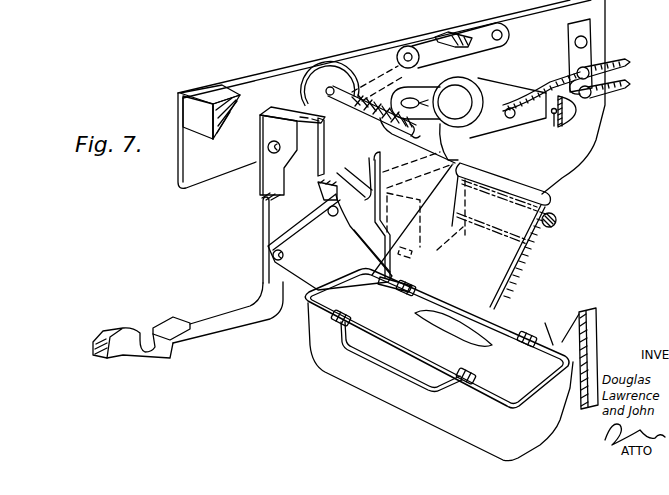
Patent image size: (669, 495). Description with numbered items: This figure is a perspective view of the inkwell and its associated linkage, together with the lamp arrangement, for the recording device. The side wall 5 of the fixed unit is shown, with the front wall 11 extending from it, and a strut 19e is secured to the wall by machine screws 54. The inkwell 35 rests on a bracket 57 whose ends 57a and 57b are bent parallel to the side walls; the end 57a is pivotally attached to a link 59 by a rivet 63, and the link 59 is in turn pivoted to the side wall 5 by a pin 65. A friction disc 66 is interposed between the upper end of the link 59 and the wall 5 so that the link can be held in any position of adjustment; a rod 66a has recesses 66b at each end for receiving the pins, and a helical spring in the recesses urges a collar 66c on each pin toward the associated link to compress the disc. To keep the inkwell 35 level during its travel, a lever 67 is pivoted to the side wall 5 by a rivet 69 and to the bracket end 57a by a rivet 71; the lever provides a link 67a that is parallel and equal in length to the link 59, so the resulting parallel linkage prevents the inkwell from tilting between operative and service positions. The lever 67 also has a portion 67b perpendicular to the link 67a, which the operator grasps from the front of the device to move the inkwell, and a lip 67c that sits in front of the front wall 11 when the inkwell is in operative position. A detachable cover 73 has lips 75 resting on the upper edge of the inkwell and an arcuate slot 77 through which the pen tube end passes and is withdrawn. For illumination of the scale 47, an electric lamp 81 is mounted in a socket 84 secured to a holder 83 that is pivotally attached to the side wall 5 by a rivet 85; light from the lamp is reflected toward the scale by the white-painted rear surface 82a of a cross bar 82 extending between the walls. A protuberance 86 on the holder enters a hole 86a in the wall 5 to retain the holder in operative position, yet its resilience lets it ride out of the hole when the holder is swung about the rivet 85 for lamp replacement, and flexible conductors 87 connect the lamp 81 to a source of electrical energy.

The side wall 5 is at (368, 50).
The front wall 11 is at (522, 267).
The strut 19e is at (446, 35).
The inkwell 35 is at (450, 253).
The scale 47 is at (291, 105).
The machine screws 54 is at (408, 46).
The bracket 57 is at (570, 390).
The bracket end 57a is at (316, 211).
The bracket end 57b is at (593, 316).
The link 59 is at (391, 72).
The rivets 63 is at (332, 217).
The pins 65 is at (387, 80).
The friction disc 66 is at (300, 92).
The rod 66a is at (412, 138).
The recesses 66b is at (380, 128).
The collar 66c is at (340, 93).
The lever 67 is at (262, 212).
The link 67a is at (260, 167).
The lever portion 67b is at (230, 297).
The lip 67c is at (173, 345).
The rivet 69 is at (268, 147).
The rivet 71 is at (273, 255).
The cover 73 is at (528, 383).
The lips 75 is at (397, 290).
The arcuate slot 77 is at (415, 320).
The electric lamp 81 is at (412, 95).
The cross bar 82 is at (186, 106).
The rear surface 82a is at (216, 116).
The holder 83 is at (510, 90).
The socket 84 is at (454, 86).
The rivet 85 is at (511, 119).
The protuberance 86 is at (568, 118).
The hole 86a is at (554, 116).
The flexible conductors 87 is at (630, 83).